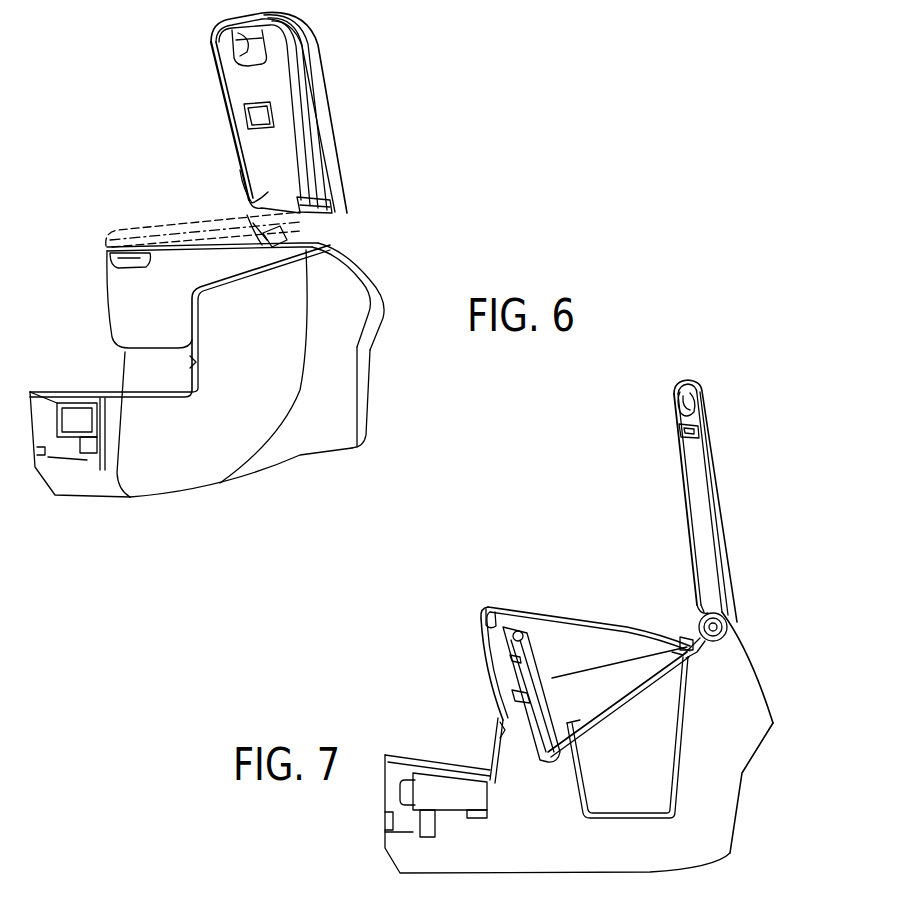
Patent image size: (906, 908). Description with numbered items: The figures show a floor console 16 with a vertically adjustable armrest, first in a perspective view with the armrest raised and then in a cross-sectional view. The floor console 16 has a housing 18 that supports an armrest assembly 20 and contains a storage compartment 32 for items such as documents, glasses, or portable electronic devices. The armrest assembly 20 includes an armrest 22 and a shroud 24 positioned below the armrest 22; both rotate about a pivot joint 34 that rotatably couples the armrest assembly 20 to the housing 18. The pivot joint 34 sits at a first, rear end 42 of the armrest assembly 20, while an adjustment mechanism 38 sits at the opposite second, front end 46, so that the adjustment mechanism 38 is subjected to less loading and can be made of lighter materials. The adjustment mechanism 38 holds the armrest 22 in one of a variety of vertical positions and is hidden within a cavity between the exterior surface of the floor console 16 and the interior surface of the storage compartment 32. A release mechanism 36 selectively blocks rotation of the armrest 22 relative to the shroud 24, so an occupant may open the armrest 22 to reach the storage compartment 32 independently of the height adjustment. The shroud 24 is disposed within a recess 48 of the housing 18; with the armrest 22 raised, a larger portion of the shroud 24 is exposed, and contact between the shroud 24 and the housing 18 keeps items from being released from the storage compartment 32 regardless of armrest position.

In FIG. 6, the floor console 16 is at (375, 246).
In FIG. 7, the floor console 16 is at (755, 633).
In FIG. 6, the housing 18 is at (362, 390).
In FIG. 7, the housing 18 is at (767, 697).
In FIG. 6, the armrest assembly 20 is at (355, 202).
In FIG. 7, the armrest assembly 20 is at (742, 580).
In FIG. 6, the armrest 22 is at (313, 68).
In FIG. 7, the armrest 22 is at (717, 463).
In FIG. 6, the shroud 24 is at (238, 262).
In FIG. 7, the shroud 24 is at (603, 622).
In FIG. 7, the storage compartment 32 is at (638, 708).
In FIG. 6, the pivot joint 34 is at (247, 183).
In FIG. 7, the pivot joint 34 is at (703, 610).
In FIG. 6, the release mechanism 36 is at (280, 47).
In FIG. 7, the release mechanism 36 is at (678, 402).
In FIG. 7, the adjustment mechanism 38 is at (527, 650).
In FIG. 7, the first end 42 is at (748, 617).
In FIG. 7, the second end 46 is at (498, 604).
In FIG. 6, the recess 48 is at (197, 362).
In FIG. 7, the recess 48 is at (497, 728).